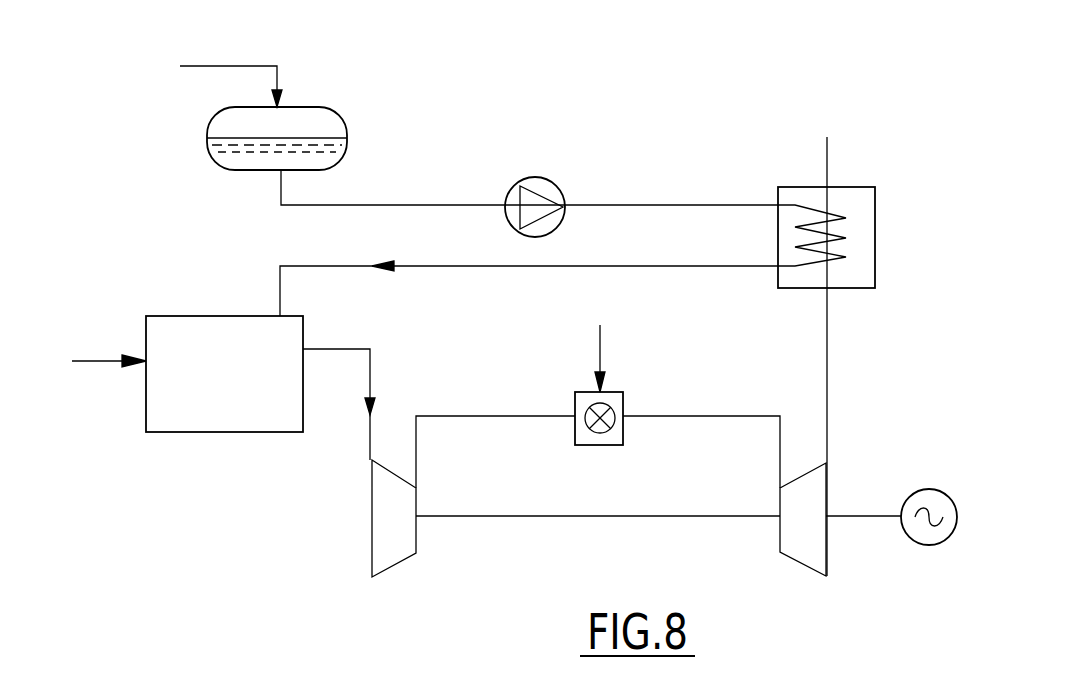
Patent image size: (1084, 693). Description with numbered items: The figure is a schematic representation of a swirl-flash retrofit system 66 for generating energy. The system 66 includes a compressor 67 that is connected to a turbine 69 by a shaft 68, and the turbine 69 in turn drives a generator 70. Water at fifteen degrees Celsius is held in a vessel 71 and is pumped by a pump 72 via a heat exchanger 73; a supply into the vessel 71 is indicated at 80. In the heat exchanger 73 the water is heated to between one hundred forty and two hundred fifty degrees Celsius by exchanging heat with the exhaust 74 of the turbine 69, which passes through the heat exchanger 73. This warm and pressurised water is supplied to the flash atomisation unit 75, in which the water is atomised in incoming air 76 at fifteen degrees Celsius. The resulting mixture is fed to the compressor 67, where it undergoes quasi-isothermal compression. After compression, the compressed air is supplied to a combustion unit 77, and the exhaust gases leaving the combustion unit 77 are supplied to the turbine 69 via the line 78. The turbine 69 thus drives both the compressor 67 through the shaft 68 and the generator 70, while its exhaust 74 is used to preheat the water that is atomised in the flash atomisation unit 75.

The system for generating energy 66 is at (757, 136).
The compressor 67 is at (396, 556).
The shaft 68 is at (591, 518).
The turbine 69 is at (802, 543).
The generator 70 is at (923, 490).
The vessel 71 is at (308, 106).
The pump 72 is at (556, 188).
The heat exchanger 73 is at (843, 187).
The exhaust 74 is at (828, 376).
The flash atomisation unit 75 is at (238, 433).
The air 76 is at (97, 365).
The combustion unit 77 is at (598, 446).
The line 78 is at (700, 418).
The fuel inlet 80 is at (232, 64).